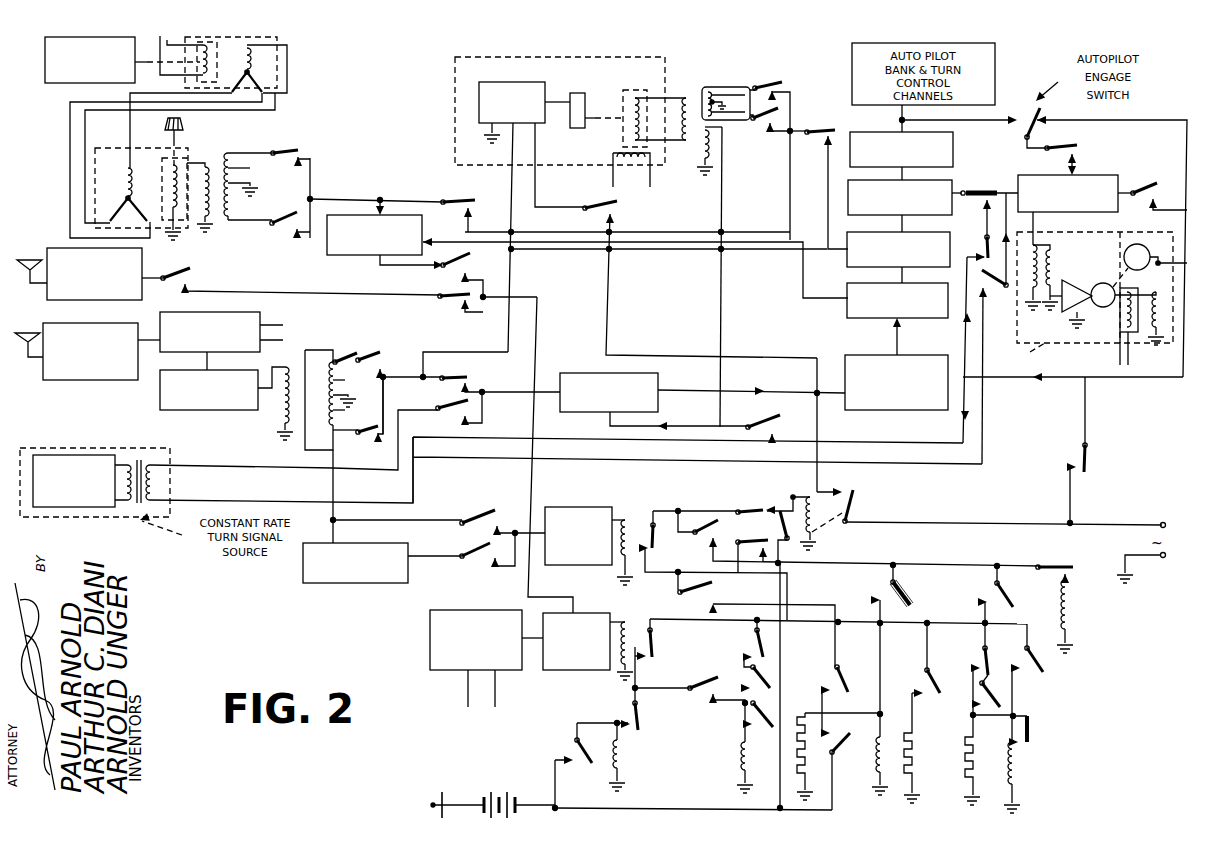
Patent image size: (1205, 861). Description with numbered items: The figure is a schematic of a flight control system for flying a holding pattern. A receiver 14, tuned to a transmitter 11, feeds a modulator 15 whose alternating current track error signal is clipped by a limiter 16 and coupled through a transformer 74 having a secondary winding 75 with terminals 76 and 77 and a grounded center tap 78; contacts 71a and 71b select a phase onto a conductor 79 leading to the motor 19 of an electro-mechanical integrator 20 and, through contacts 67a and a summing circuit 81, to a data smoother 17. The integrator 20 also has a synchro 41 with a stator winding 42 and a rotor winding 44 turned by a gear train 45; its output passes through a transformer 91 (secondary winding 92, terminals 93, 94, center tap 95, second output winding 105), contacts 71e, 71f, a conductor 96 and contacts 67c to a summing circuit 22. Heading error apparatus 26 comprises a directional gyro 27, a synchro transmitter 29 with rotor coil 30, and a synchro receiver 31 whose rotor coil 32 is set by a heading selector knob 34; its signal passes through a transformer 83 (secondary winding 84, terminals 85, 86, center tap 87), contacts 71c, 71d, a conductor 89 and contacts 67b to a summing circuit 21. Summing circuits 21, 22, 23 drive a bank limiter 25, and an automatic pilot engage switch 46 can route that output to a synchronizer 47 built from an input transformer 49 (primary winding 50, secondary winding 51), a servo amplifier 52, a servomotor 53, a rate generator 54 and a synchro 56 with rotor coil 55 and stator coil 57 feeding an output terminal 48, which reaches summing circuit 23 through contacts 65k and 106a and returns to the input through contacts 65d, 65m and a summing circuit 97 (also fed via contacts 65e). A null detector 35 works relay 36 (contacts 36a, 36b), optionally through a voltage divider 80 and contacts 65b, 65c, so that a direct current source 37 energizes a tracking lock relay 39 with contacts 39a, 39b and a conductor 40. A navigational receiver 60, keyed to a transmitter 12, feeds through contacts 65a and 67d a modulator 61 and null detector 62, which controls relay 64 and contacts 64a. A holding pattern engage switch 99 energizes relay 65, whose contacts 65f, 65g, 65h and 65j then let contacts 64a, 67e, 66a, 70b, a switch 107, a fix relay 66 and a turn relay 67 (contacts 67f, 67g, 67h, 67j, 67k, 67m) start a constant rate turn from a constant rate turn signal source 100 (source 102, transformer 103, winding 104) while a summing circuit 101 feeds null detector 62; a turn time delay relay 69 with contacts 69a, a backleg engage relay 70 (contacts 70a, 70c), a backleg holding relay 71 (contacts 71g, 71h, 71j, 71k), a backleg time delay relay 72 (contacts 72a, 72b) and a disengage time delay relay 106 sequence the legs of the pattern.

The transmitter 11 is at (28, 330).
The transmitter 12 is at (32, 256).
The receiver 14 is at (83, 375).
The modulator 15 is at (204, 348).
The limiter 16 is at (203, 406).
The data smoother 17 is at (922, 408).
The motor 19 is at (506, 119).
The electro-mechanical integrator 20 is at (450, 99).
The summing circuit 21 is at (926, 315).
The summing circuit 22 is at (926, 264).
The summing circuit 23 is at (929, 212).
The bank limiter 25 is at (929, 164).
The heading error apparatus 26 is at (300, 108).
The directional gyro 27 is at (84, 80).
The synchro transmitter 29 is at (284, 57).
The rotor coil 30 is at (213, 55).
The synchro receiver 31 is at (92, 180).
The rotor coil 32 is at (132, 185).
The heading selector knob 34 is at (163, 126).
The null detector 35 is at (572, 560).
The relay 36 is at (629, 515).
The relay contacts 36a is at (655, 553).
The relay contacts 36b is at (978, 655).
The direct current source 37 is at (477, 788).
The tracking lock relay 39 is at (824, 531).
The contact pair 39a is at (784, 503).
The contact pair 39b is at (860, 497).
The conductor 40 is at (552, 148).
The synchro 41 is at (658, 87).
The stator winding 42 is at (613, 155).
The rotor winding 44 is at (624, 92).
The gear train 45 is at (574, 93).
The automatic pilot engage switch 46 is at (1020, 134).
The synchronizer 47 is at (1100, 233).
The output terminal 48 is at (1168, 271).
The input transformer 49 is at (1066, 271).
The primary winding 50 is at (1040, 247).
The secondary winding 51 is at (1056, 258).
The servo amplifier 52 is at (1081, 295).
The servomotor 53 is at (1103, 283).
The rate generator 54 is at (1147, 244).
The rotor coil 55 is at (1120, 318).
The synchro 56 is at (1141, 347).
The stator coil 57 is at (1131, 277).
The navigational receiver 60 is at (87, 297).
The modulator 61 is at (470, 663).
The null detector 62 is at (570, 667).
The relay 64 is at (623, 620).
The contacts 64a is at (661, 642).
The holding pattern engage relay 65 is at (882, 740).
The normally open contacts 65a is at (192, 273).
The normally closed relay contacts 65b is at (470, 520).
The normally open relay contacts 65c is at (474, 563).
The normally closed relay contacts 65d is at (1076, 144).
The normally open contacts 65e is at (990, 297).
The normally closed contacts 65f is at (744, 506).
The normally closed contacts 65g is at (750, 551).
The normally open contacts 65h is at (700, 540).
The normally open contacts 65j is at (678, 596).
The normally closed relay contacts 65k is at (980, 246).
The normally open contacts 65m is at (1143, 181).
The fix relay 66 is at (625, 753).
The fix relay contacts 66a is at (846, 674).
The turn relay 67 is at (1075, 625).
The turn relay contacts 67a is at (469, 378).
The turn relay contacts 67b is at (453, 197).
The turn relay contacts 67c is at (820, 142).
The turn relay contacts 67d is at (444, 306).
The turn relay contacts 67e is at (623, 709).
The turn relay contacts 67f is at (433, 404).
The turn relay contacts 67g is at (582, 200).
The turn relay contacts 67h is at (438, 273).
The turn relay contacts 67j is at (1012, 598).
The turn relay contacts 67k is at (943, 682).
The turn relay contacts 67m is at (706, 701).
The turn time delay relay 69 is at (920, 765).
The contacts 69a is at (744, 713).
The backleg engage relay 70 is at (740, 760).
The contacts 70a is at (746, 674).
The backleg engage relay contacts 70b is at (1060, 565).
The contacts 70c is at (976, 700).
The backleg holding relay 71 is at (1022, 776).
The normally open contacts 71a is at (372, 345).
The normally closed contacts 71b is at (358, 414).
The normally closed relay contacts 71c is at (305, 150).
The normally open relay contacts 71d is at (289, 233).
The normally closed relay contacts 71e is at (774, 83).
The normally open relay contacts 71f is at (787, 108).
The contacts 71g is at (780, 419).
The contacts 71h is at (1073, 452).
The contacts 71j is at (750, 646).
The contacts 71k is at (1048, 662).
The backleg time delay relay 72 is at (977, 765).
The normally closed contacts 72a is at (1037, 735).
The contacts 72b is at (916, 595).
The transformer 74 is at (302, 348).
The secondary winding 75 is at (350, 378).
The output terminal 76 is at (349, 348).
The output terminal 77 is at (351, 417).
The grounded center tap 78 is at (357, 395).
The conductor 79 is at (389, 371).
The voltage divider 80 is at (340, 586).
The summing circuit 81 is at (646, 407).
The transformer 83 is at (221, 231).
The secondary winding 84 is at (250, 167).
The terminal 85 is at (278, 150).
The terminal 86 is at (271, 220).
The grounded center tap 87 is at (260, 183).
The conductor 89 is at (440, 201).
The transformer 91 is at (697, 151).
The secondary winding 92 is at (729, 95).
The terminal 93 is at (729, 87).
The terminal 94 is at (732, 118).
The grounded center tap 95 is at (729, 107).
The conductor 96 is at (812, 130).
The summing circuit 97 is at (1094, 207).
The holding pattern engage switch 99 is at (845, 750).
The constant rate turn signal source 100 is at (68, 448).
The summing circuit 101 is at (412, 249).
The constant voltage alternating current source 102 is at (92, 455).
The output transformer 103 is at (146, 462).
The secondary winding 104 is at (160, 482).
The second output winding 105 is at (724, 150).
The holding pattern disengage time delay relay 106 is at (804, 713).
The normally closed contacts 106a is at (991, 186).
The manually operated switch 107 is at (563, 751).